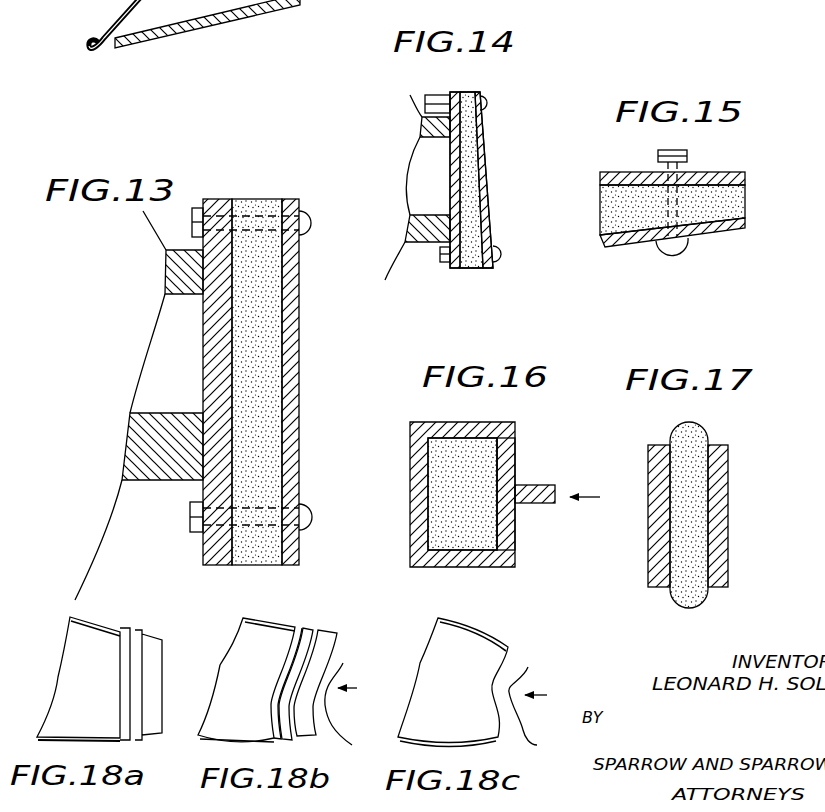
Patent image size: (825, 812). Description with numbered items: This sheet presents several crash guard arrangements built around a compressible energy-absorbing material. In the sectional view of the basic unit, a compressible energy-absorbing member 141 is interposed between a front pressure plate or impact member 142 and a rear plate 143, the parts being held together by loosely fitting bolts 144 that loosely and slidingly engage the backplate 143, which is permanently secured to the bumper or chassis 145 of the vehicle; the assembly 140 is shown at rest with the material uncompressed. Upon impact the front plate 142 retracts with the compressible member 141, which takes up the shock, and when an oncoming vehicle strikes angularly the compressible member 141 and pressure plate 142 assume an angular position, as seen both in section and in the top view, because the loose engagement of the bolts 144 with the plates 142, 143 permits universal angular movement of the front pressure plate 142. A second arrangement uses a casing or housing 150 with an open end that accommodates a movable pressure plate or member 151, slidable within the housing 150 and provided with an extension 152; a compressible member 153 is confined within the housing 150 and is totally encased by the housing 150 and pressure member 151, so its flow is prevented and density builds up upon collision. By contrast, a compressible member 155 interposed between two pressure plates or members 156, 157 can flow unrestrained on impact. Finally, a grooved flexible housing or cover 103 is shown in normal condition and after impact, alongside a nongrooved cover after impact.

In FIG. 18A, the flexible housing or cover 103 is at (162, 660).
In FIG. 18B, the flexible housing or cover 103 is at (331, 648).
In FIG. 18C, the flexible housing or cover 103 is at (504, 657).
In FIG. 13, the abrasive pad assembly 140 is at (312, 321).
In FIG. 14, the abrasive pad assembly 140 is at (498, 228).
In FIG. 14, the compressible energy-absorbing member 141 is at (468, 157).
In FIG. 15, the compressible energy-absorbing member 141 is at (744, 203).
In FIG. 13, the front pressure plate or impact member 142 is at (297, 436).
In FIG. 14, the front pressure plate or impact member 142 is at (485, 185).
In FIG. 15, the front pressure plate or impact member 142 is at (746, 228).
In FIG. 13, the rear plate 143 is at (212, 386).
In FIG. 14, the rear plate 143 is at (450, 157).
In FIG. 15, the rear plate 143 is at (714, 176).
In FIG. 13, the bolts 144 is at (263, 213).
In FIG. 14, the bolts 144 is at (440, 102).
In FIG. 15, the bolts 144 is at (658, 157).
In FIG. 13, the bumper or chassis 145 is at (143, 350).
In FIG. 16, the casing or housing 150 is at (514, 433).
In FIG. 16, the movable pressure plate or member 151 is at (505, 538).
In FIG. 16, the extension 152 is at (538, 488).
In FIG. 16, the compressible member 153 is at (482, 522).
In FIG. 17, the compressible member 155 is at (695, 437).
In FIG. 17, the pressure plate or member 156 is at (719, 517).
In FIG. 17, the pressure plate or member 157 is at (655, 578).